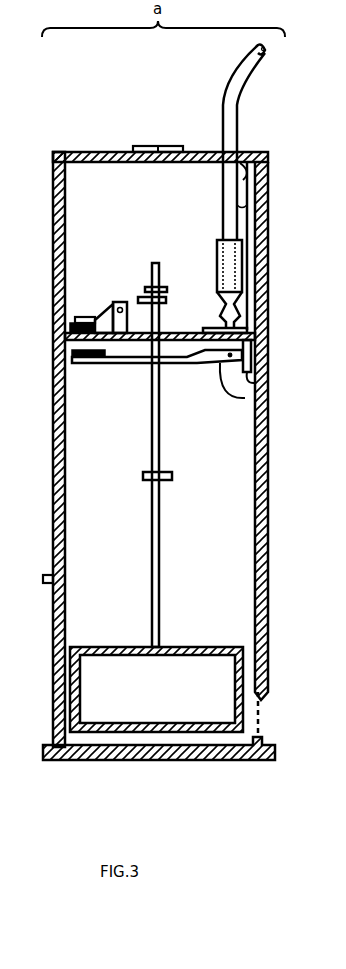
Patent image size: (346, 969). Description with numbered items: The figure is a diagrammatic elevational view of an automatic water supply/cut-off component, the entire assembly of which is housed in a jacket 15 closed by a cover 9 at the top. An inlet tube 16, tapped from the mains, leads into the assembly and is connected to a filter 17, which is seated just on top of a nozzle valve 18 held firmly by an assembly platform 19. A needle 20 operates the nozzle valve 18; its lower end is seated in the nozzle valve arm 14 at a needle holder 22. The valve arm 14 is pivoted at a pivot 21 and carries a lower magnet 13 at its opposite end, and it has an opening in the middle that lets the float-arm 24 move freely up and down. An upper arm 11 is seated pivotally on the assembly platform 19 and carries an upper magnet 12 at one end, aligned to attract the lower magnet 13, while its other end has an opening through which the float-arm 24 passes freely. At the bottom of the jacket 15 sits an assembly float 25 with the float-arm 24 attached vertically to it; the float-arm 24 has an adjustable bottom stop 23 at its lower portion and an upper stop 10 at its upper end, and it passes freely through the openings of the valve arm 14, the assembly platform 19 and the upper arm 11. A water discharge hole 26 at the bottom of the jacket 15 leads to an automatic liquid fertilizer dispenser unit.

The cover 9 is at (57, 152).
The upper stop 10 is at (146, 288).
The upper arm 11 is at (113, 308).
The upper magnet 12 is at (72, 319).
The lower magnet 13 is at (68, 336).
The nozzle valve arm 14 is at (80, 362).
The jacket 15 is at (248, 160).
The inlet tube 16 is at (245, 205).
The filter 17 is at (240, 240).
The nozzle valve 18 is at (237, 306).
The assembly platform 19 is at (242, 318).
The needle 20 is at (252, 347).
The pivot 21 is at (250, 373).
The needle holder 22 is at (248, 398).
The adjustable bottom stop 23 is at (172, 476).
The float-arm 24 is at (160, 523).
The assembly float 25 is at (200, 647).
The water discharge hole 26 is at (263, 717).